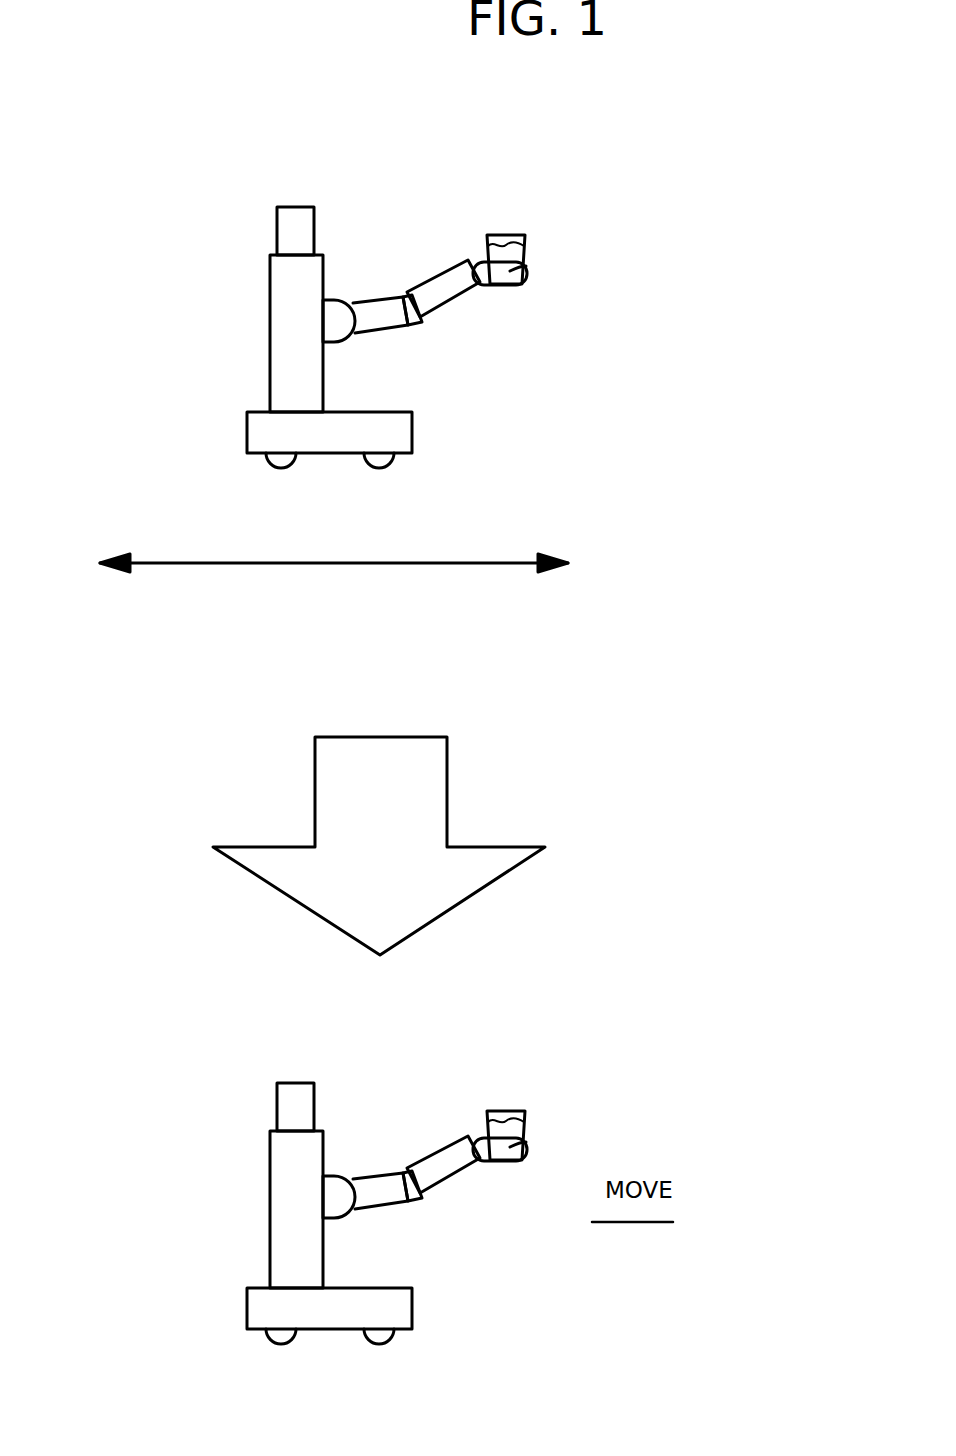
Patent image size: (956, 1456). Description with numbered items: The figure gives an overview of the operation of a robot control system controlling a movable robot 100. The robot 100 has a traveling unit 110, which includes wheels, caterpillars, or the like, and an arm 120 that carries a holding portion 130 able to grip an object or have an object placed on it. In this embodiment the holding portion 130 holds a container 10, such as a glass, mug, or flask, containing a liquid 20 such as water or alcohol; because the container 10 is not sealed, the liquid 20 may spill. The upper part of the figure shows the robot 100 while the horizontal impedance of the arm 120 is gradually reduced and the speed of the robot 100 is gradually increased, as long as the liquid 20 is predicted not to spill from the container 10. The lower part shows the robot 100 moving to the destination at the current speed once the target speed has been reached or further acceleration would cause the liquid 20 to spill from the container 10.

The robot 100 is at (176, 178).
The traveling unit 110 is at (397, 470).
The arm 120 is at (532, 286).
The holding portion 130 is at (528, 267).
The container 10 is at (488, 235).
The liquid 20 is at (514, 246).